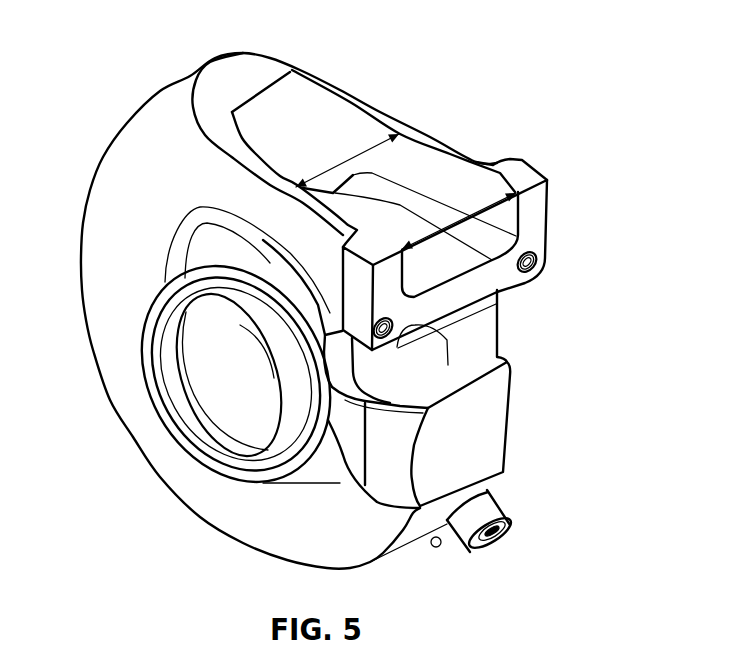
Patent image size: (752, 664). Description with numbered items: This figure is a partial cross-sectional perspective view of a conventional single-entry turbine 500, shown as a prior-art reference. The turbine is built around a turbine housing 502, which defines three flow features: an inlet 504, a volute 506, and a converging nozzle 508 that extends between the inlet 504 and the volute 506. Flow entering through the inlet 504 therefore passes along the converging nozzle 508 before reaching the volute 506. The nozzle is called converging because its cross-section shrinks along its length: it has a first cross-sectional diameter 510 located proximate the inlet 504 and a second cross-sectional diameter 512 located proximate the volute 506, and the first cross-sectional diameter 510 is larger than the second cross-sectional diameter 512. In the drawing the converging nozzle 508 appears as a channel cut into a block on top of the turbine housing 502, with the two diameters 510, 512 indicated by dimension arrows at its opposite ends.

The conventional single-entry turbine 500 is at (608, 43).
The turbine housing 502 is at (133, 151).
The inlet 504 is at (457, 263).
The volute 506 is at (279, 168).
The converging nozzle 508 is at (415, 200).
The first cross-sectional diameter 510 is at (516, 244).
The second cross-sectional diameter 512 is at (362, 148).